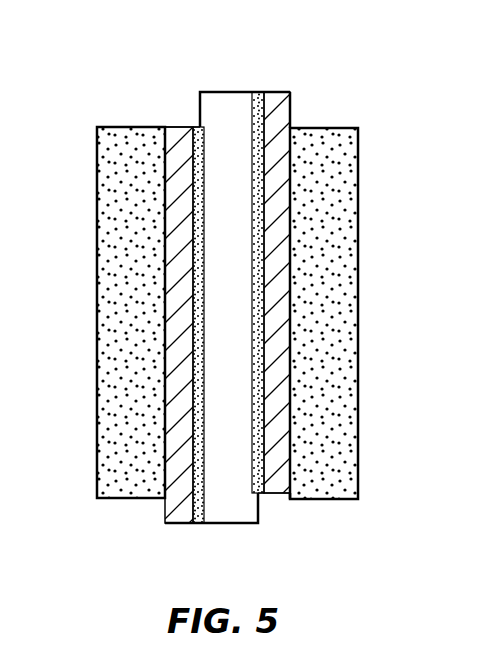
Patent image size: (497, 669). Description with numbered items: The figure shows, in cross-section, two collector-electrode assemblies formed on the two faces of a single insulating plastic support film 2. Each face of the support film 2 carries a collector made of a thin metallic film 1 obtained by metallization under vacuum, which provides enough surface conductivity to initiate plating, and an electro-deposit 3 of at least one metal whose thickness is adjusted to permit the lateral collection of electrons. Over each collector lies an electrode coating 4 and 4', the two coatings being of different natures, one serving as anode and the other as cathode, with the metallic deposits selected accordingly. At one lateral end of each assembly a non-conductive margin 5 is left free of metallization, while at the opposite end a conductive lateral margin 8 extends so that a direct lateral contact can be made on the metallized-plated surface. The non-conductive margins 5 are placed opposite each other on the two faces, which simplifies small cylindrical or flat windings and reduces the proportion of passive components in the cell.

The metallic film 1 is at (258, 90).
The insulating plastic support film 2 is at (222, 90).
The electro-deposit 3 is at (290, 308).
The electrode coating 4 is at (355, 313).
The electrode coating 4' is at (93, 312).
The non-conductive lateral margin 5 is at (192, 112).
The conductive lateral margin 8 is at (160, 510).